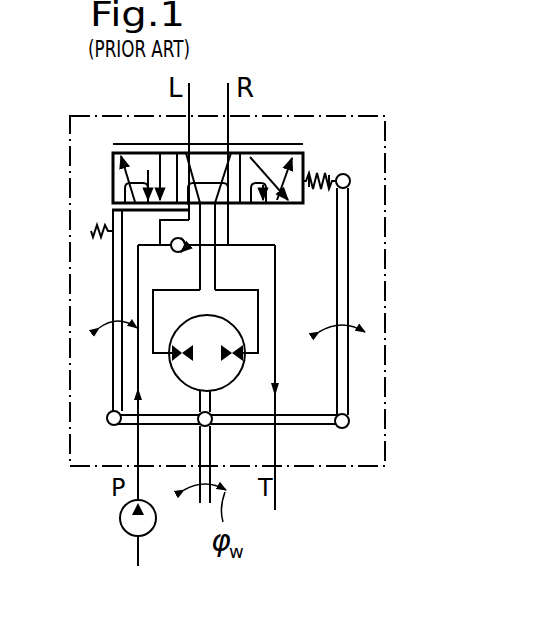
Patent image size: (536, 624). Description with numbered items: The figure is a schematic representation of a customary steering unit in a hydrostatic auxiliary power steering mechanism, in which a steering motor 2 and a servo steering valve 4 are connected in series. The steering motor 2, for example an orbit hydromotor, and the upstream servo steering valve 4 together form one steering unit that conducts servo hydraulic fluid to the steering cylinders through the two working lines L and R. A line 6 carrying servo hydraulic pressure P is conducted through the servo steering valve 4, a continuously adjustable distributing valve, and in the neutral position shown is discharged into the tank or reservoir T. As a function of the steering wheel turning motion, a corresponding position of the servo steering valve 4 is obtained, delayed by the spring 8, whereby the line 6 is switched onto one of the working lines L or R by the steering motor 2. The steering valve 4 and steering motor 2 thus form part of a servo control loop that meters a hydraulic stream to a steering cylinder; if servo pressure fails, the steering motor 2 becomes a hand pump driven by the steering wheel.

The steering motor 2 is at (246, 377).
The servo steering valve 4 is at (313, 162).
The line 6 is at (137, 447).
The spring 8 is at (333, 173).